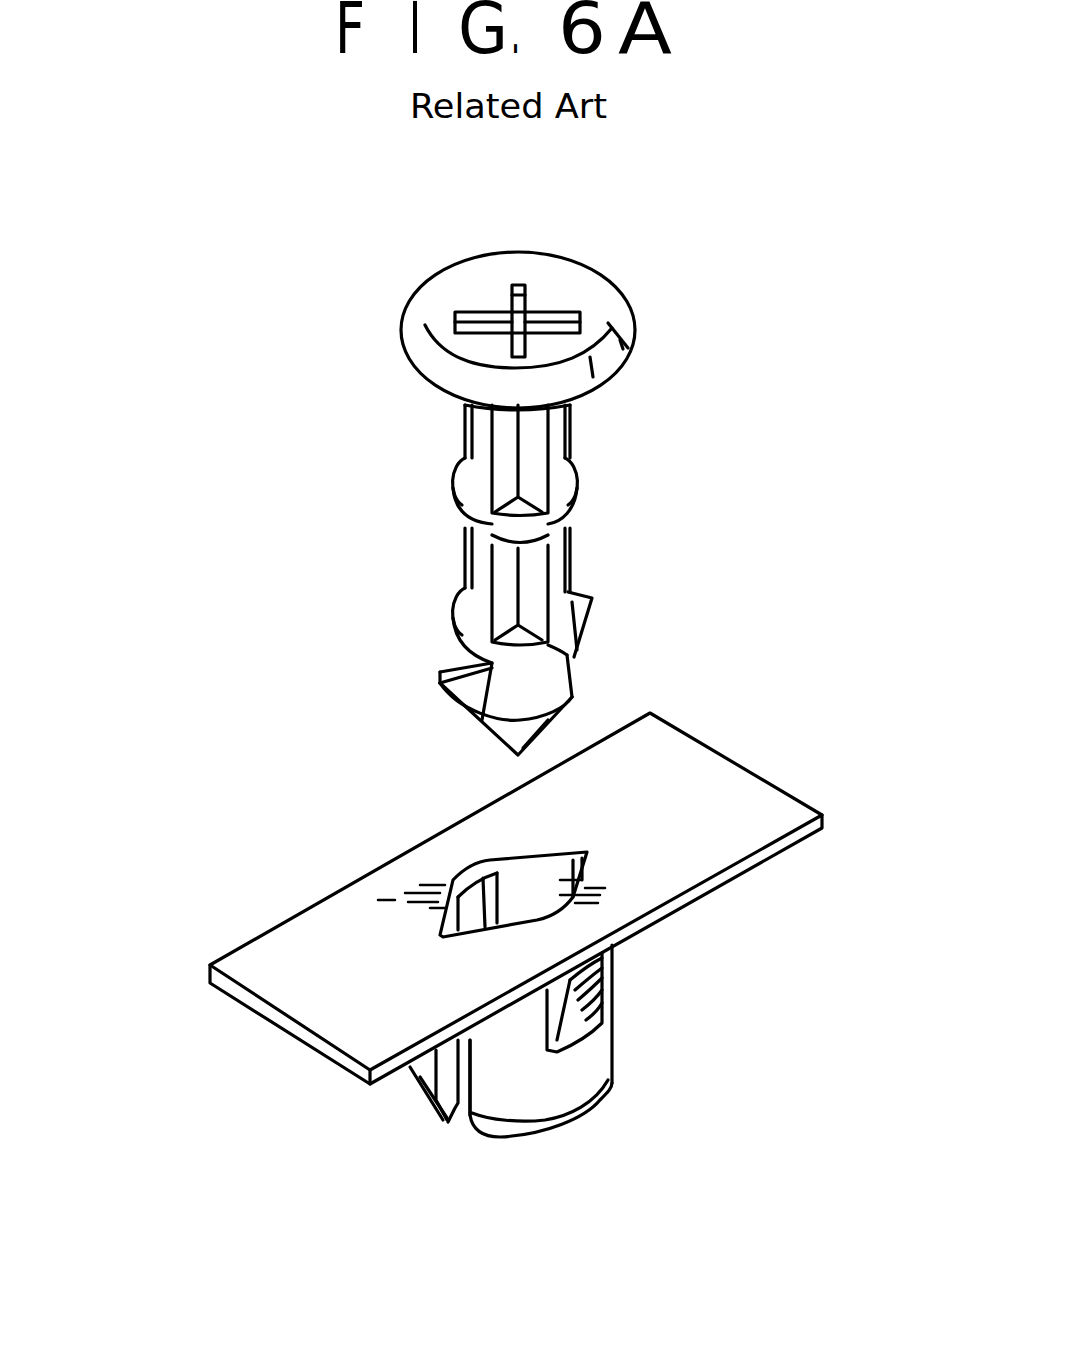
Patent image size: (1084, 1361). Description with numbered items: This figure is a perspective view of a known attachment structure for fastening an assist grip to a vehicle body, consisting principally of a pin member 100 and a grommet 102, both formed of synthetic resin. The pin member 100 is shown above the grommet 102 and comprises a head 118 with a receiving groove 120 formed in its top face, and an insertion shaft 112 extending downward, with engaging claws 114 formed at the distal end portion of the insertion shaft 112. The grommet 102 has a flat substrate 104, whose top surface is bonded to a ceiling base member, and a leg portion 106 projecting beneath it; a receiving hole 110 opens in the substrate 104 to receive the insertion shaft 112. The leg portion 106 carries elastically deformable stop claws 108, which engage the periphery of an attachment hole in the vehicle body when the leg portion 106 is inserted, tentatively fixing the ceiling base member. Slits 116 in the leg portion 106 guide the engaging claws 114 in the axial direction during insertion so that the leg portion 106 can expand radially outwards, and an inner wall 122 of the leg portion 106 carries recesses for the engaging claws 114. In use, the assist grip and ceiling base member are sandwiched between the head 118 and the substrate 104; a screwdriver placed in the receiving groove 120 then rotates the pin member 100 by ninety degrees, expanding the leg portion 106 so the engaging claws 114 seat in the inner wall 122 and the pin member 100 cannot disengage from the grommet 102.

The pin member 100 is at (648, 300).
The grommet 102 is at (788, 758).
The substrate 104 is at (342, 946).
The leg portion 106 is at (588, 1067).
The stop claws 108 is at (577, 1007).
The receiving hole 110 is at (512, 880).
The insertion shaft 112 is at (553, 465).
The engaging claws 114 is at (590, 594).
The slits 116 is at (467, 1080).
The head 118 is at (445, 297).
The receiving groove 120 is at (510, 288).
The inner wall 122 is at (425, 1125).